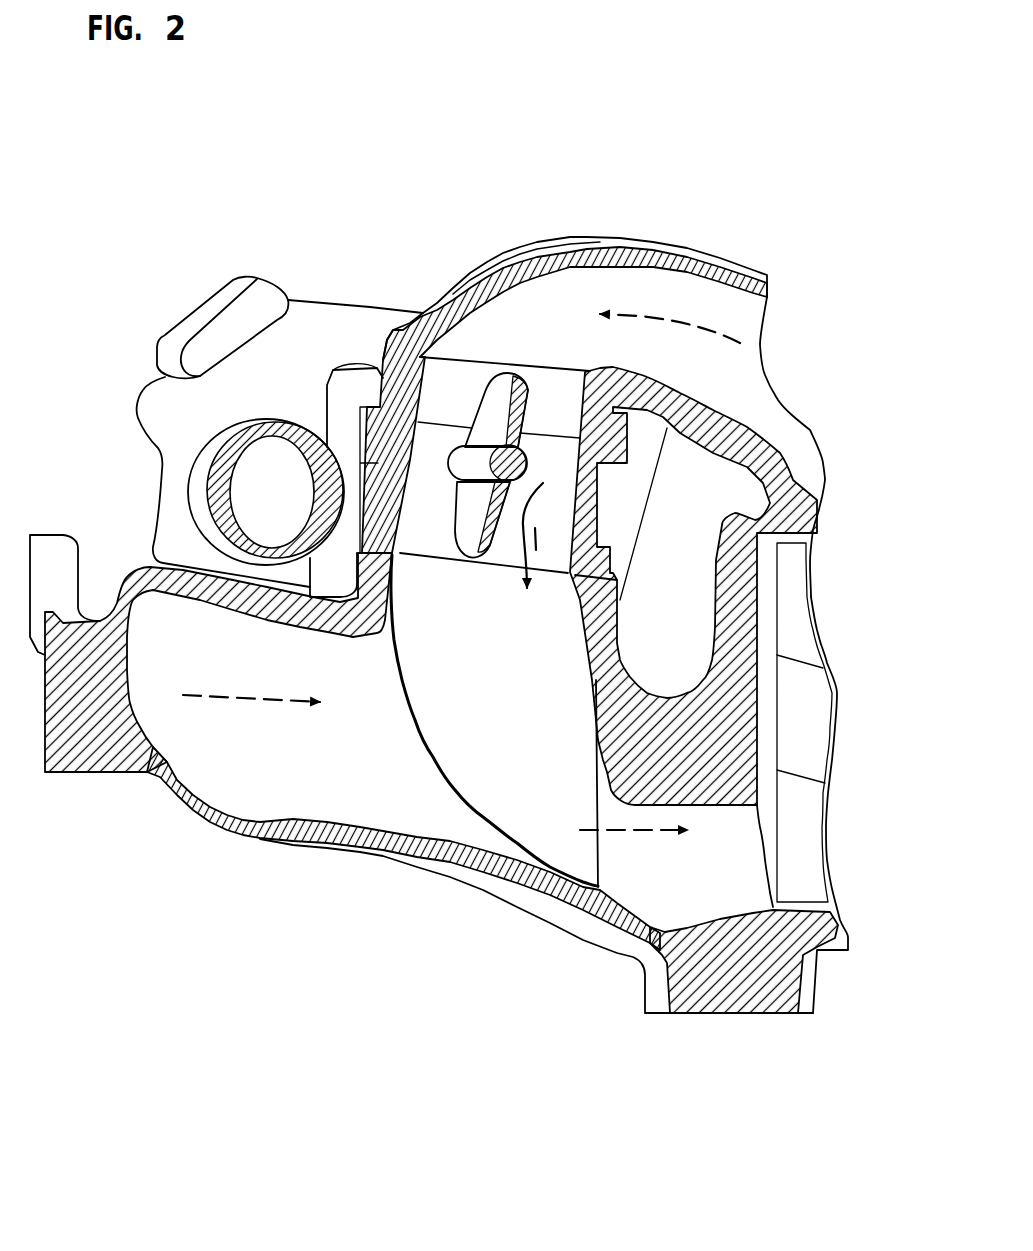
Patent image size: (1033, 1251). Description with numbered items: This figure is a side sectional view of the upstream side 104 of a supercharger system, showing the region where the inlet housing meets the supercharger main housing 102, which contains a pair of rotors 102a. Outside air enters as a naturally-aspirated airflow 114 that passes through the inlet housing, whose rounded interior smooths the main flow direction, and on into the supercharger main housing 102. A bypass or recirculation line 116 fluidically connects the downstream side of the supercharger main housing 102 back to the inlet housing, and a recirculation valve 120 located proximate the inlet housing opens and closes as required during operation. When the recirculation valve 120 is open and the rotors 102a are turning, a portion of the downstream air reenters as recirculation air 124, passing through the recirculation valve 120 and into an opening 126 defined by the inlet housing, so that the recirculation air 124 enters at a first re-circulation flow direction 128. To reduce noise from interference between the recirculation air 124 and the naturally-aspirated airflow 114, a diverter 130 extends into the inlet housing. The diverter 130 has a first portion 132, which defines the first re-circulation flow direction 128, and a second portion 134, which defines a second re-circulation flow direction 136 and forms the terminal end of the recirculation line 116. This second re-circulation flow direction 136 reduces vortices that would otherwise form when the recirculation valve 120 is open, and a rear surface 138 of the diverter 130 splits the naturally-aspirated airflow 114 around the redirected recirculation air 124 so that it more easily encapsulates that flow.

The supercharger main housing 102 is at (773, 937).
The rotors 102a is at (806, 726).
The upstream side 104 is at (632, 1026).
The naturally-aspirated airflow 114 is at (240, 697).
The recirculation line 116 is at (743, 328).
The recirculation valve 120 is at (390, 398).
The recirculation air 124 is at (667, 318).
The opening 126 is at (413, 557).
The first re-circulation flow direction 128 is at (548, 527).
The diverter 130 is at (437, 697).
The first portion 132 is at (480, 567).
The second portion 134 is at (607, 855).
The second re-circulation flow direction 136 is at (650, 833).
The rear surface 138 is at (432, 764).